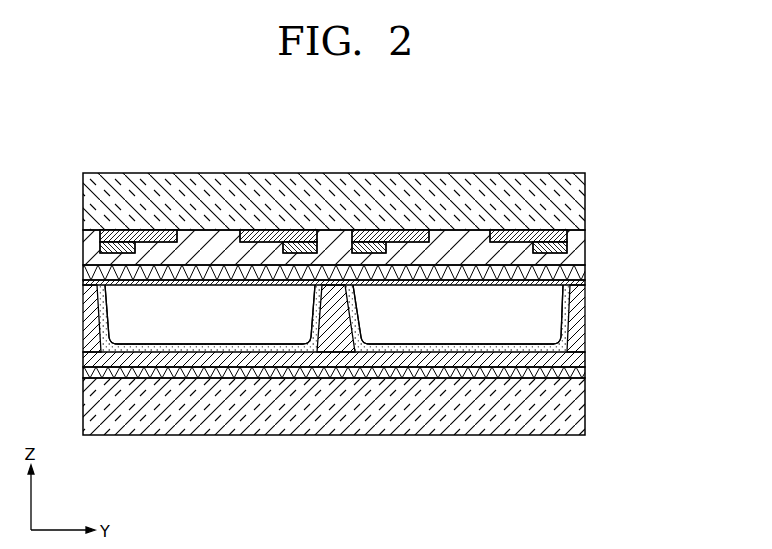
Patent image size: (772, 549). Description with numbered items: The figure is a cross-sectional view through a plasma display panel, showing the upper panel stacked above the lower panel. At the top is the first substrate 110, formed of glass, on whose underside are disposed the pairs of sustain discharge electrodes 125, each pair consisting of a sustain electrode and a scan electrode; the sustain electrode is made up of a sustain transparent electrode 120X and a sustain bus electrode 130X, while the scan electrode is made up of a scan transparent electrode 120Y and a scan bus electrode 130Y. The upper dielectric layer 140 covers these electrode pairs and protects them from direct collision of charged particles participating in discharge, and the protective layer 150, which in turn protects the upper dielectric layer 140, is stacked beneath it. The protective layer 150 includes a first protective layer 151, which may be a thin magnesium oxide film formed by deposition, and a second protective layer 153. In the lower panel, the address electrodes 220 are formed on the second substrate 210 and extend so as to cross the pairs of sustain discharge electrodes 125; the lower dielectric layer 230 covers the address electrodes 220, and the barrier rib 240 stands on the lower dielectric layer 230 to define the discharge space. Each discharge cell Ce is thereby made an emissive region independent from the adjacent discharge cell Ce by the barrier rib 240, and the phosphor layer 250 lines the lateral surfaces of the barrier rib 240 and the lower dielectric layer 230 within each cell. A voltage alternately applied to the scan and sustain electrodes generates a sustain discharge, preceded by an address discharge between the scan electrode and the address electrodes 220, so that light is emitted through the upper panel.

The first substrate 110 is at (580, 198).
The upper dielectric layer 140 is at (575, 258).
The pairs of sustain discharge electrodes 125 is at (338, 157).
The sustain transparent electrode 120X is at (405, 237).
The sustain bus electrode 130X is at (371, 247).
The scan transparent electrode 120Y is at (510, 237).
The scan bus electrode 130Y is at (548, 247).
The protective layer 150 is at (393, 280).
The first protective layer 151 is at (575, 272).
The second protective layer 153 is at (580, 285).
The barrier rib 240 is at (333, 343).
The phosphor layer 250 is at (453, 352).
The discharge cell Ce is at (489, 307).
The lower dielectric layer 230 is at (578, 362).
The address electrodes 220 is at (578, 372).
The second substrate 210 is at (578, 418).